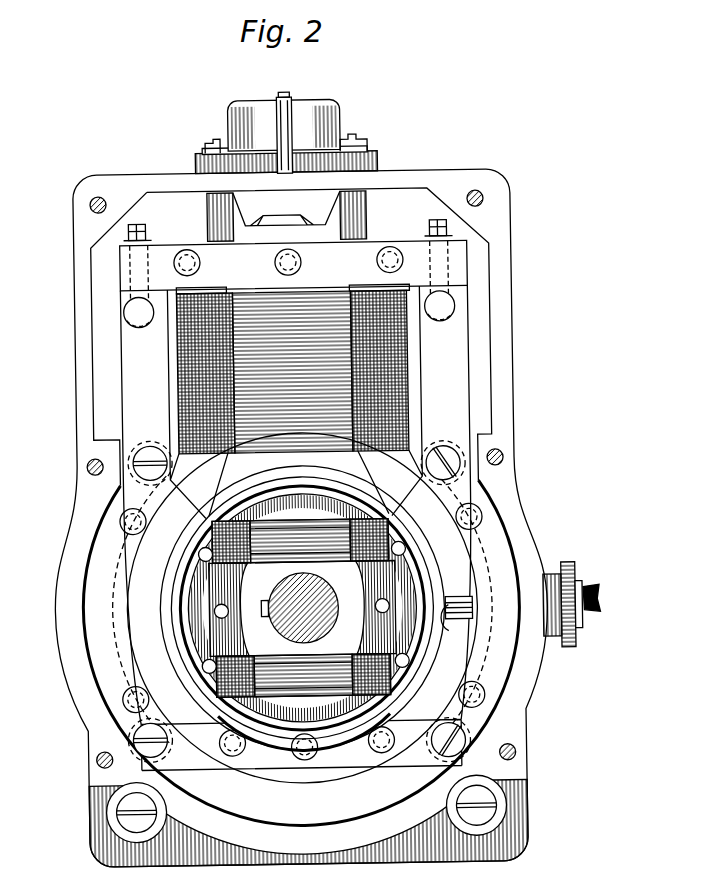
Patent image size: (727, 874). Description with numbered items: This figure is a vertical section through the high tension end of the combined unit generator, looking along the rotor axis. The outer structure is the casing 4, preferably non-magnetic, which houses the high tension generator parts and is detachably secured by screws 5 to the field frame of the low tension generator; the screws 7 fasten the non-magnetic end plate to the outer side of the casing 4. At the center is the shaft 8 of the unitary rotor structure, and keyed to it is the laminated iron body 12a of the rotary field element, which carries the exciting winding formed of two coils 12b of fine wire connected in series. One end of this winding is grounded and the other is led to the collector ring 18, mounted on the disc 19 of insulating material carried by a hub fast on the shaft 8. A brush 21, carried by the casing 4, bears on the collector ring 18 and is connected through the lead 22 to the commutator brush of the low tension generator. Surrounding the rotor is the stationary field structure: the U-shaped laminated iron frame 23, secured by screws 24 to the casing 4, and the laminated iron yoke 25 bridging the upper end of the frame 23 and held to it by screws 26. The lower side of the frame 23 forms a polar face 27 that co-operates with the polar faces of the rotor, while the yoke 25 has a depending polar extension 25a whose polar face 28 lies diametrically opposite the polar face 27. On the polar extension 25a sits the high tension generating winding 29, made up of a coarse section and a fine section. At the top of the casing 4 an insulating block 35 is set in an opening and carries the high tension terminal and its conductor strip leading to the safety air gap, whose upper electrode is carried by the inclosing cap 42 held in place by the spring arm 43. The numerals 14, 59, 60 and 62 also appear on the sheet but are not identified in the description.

The casing 4 is at (64, 657).
The screws 5 is at (130, 823).
The screws 7 is at (94, 205).
The shaft 8 is at (326, 624).
The laminated iron body 12a is at (302, 609).
The exciting coils 12b is at (276, 527).
The rotor 14 is at (304, 628).
The collector ring 18 is at (158, 608).
The disc 19 is at (172, 638).
The brush 21 is at (442, 628).
The lead 22 is at (594, 606).
The U-shaped laminated iron frame 23 is at (297, 527).
The screws 24 is at (151, 452).
The laminated iron yoke 25 is at (294, 265).
The polar extension 25a is at (298, 484).
The screws 26 is at (146, 222).
The polar face 27 is at (356, 722).
The polar face 28 is at (262, 490).
The high tension generating winding 29 is at (266, 320).
The insulating block 35 is at (204, 166).
The inclosing cap 42 is at (340, 120).
The spring arm 43 is at (294, 102).
The marginal numeral 59 is at (85, 868).
The marginal numeral 60 is at (109, 869).
The marginal numeral 62 is at (59, 869).